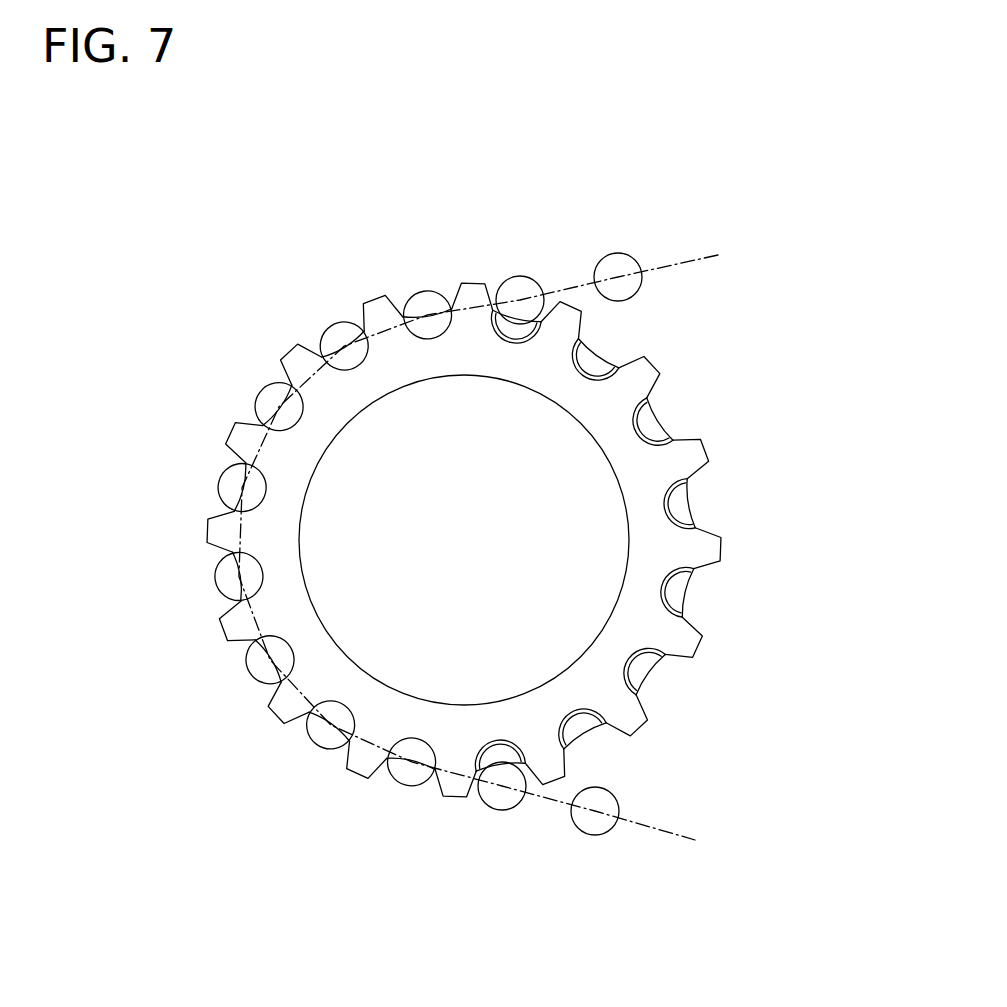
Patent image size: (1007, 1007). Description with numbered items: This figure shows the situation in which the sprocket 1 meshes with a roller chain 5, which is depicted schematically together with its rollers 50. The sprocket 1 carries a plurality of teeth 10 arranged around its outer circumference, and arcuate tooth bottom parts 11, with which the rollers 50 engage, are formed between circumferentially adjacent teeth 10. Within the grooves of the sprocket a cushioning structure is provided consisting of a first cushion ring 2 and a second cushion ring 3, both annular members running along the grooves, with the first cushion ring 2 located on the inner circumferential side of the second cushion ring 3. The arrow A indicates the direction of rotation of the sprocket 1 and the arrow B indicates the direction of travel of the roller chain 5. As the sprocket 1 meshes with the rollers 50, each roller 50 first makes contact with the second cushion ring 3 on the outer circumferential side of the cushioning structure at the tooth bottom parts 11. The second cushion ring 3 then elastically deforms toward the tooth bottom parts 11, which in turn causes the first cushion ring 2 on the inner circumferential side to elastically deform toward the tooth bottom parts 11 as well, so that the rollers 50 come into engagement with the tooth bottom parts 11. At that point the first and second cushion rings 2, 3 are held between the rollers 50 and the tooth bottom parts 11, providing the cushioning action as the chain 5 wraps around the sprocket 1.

The sprocket 1 is at (268, 290).
The first cushion ring 2 is at (663, 426).
The second cushion ring 3 is at (604, 351).
The roller chain 5 is at (668, 845).
The teeth 10 is at (461, 284).
The tooth bottom parts 11 is at (673, 510).
The rollers 50 is at (614, 255).
The direction of rotation of the sprocket A is at (315, 523).
The direction of travel of the roller chain B is at (730, 272).